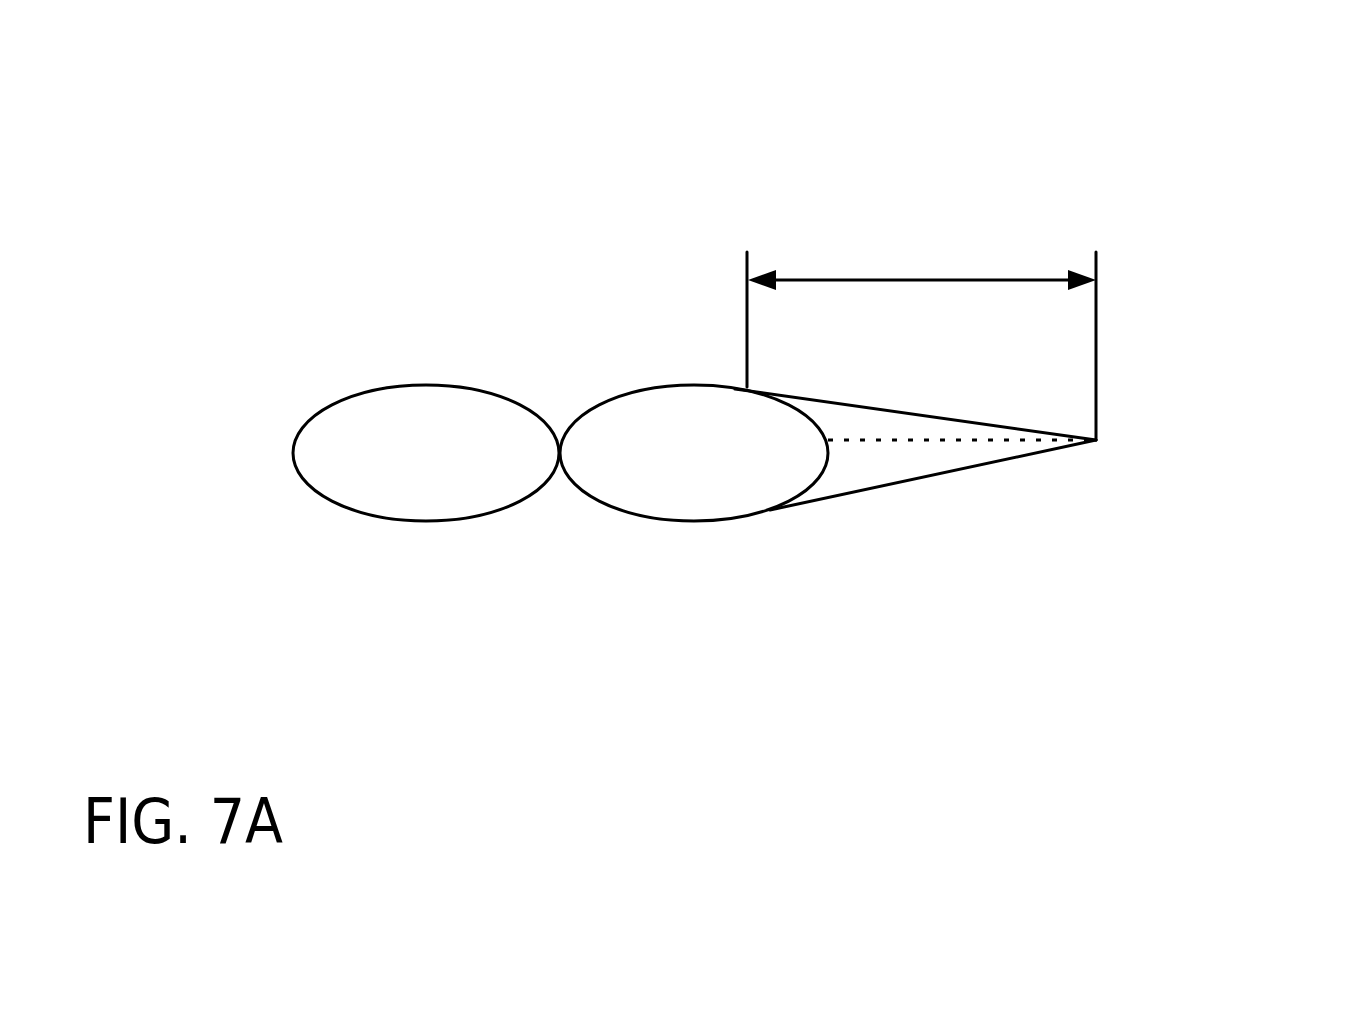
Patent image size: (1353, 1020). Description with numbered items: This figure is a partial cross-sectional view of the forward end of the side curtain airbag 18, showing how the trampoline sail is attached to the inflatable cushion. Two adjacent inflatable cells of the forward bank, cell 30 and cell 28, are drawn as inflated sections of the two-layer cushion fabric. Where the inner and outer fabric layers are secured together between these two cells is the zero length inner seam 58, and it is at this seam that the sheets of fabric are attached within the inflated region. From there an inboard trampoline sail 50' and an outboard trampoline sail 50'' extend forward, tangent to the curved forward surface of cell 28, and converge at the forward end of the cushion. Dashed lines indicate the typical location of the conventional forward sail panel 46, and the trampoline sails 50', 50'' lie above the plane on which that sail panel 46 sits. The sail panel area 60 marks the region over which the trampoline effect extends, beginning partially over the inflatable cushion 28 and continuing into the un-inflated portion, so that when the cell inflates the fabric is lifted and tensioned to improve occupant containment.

The side curtain airbag 18 is at (490, 290).
The cell 28 is at (640, 465).
The cell 30 is at (373, 467).
The forward sail panel 46 is at (1096, 440).
The inboard trampoline sail 50' is at (915, 370).
The outboard trampoline sail 50'' is at (936, 528).
The zero length inner seam 58 is at (565, 430).
The sail panel area 60 is at (908, 278).